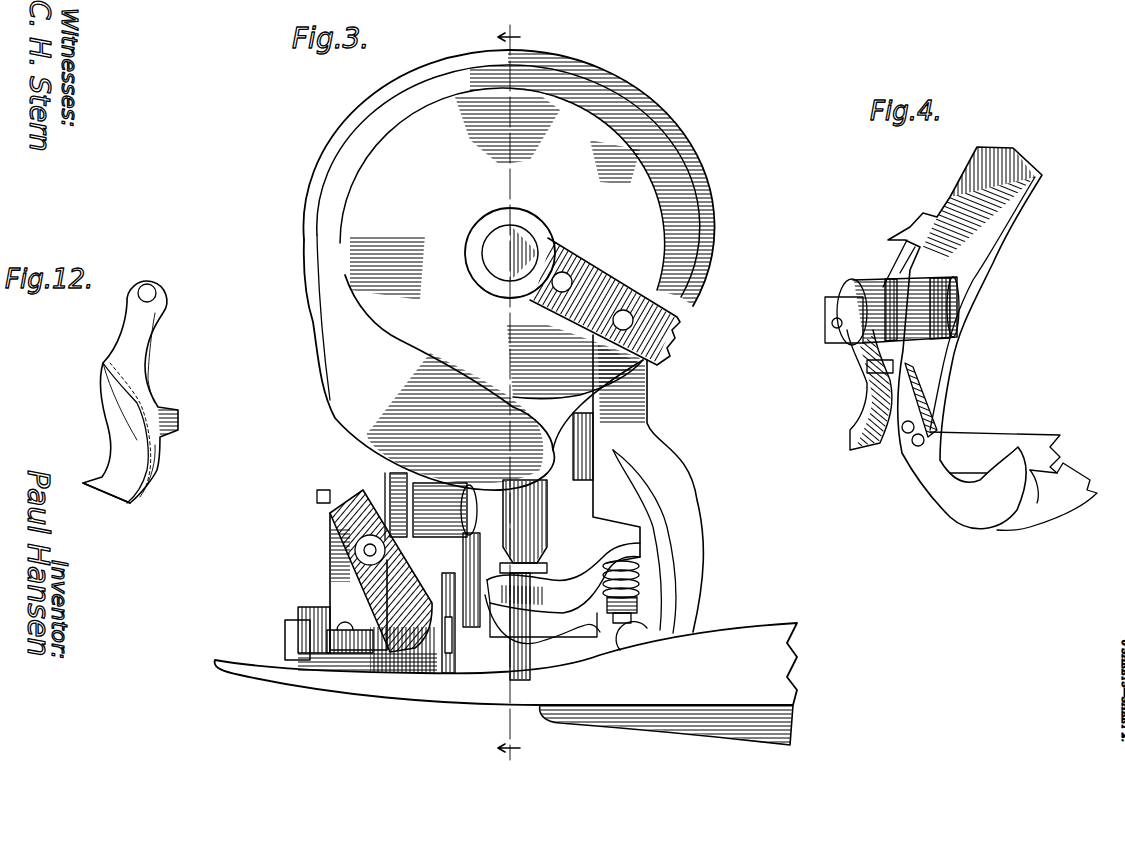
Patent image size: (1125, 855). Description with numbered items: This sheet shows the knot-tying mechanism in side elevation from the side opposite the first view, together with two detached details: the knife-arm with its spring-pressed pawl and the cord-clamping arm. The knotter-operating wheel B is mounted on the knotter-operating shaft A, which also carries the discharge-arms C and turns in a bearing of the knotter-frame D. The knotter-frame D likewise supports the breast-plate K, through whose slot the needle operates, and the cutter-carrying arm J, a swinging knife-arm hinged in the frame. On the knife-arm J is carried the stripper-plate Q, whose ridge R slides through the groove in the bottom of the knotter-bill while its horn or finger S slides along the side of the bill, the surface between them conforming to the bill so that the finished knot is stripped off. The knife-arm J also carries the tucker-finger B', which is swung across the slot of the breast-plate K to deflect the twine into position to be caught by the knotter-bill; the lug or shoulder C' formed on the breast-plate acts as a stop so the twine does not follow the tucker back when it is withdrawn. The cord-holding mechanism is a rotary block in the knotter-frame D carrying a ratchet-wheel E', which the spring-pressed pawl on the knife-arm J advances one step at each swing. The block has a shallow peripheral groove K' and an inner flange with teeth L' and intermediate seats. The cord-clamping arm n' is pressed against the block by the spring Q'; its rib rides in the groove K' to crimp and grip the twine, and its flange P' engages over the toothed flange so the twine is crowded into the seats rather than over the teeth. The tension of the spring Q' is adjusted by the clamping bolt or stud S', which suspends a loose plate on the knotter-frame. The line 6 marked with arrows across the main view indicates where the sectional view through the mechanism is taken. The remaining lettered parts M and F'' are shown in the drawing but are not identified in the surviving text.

In FIG. 3, the knotter-operating wheel B is at (507, 270).
In FIG. 3, the knotter-operating shaft A is at (497, 256).
In FIG. 3, the discharge-arms C is at (623, 301).
In FIG. 3, the ratchet-wheel E' is at (640, 484).
In FIG. 3, the cord-clamping arm n' is at (351, 492).
In FIG. 12, the cord-clamping arm n' is at (133, 392).
In FIG. 3, the adjusting clamping bolt or stud S' is at (338, 550).
In FIG. 3, the cutter-carrying arm J is at (468, 550).
In FIG. 4, the cutter-carrying arm J is at (992, 215).
In FIG. 3, the bracket plate M is at (440, 590).
In FIG. 3, the shallow peripheral groove K' is at (381, 571).
In FIG. 3, the knotter-frame D is at (287, 634).
In FIG. 3, the breast-plate K is at (506, 684).
In FIG. 3, the teeth L' is at (436, 653).
In FIG. 3, the horn or finger S is at (499, 607).
In FIG. 3, the ridge R is at (530, 590).
In FIG. 3, the stripper-plate Q is at (542, 646).
In FIG. 3, the tucker-finger B' is at (563, 617).
In FIG. 3, the lug or shoulder C' is at (629, 619).
In FIG. 3, the section line 6 6 is at (511, 396).
In FIG. 4, the spring housing F'' is at (890, 345).
In FIG. 12, the flange P' is at (104, 401).
In FIG. 12, the spring Q' is at (103, 473).